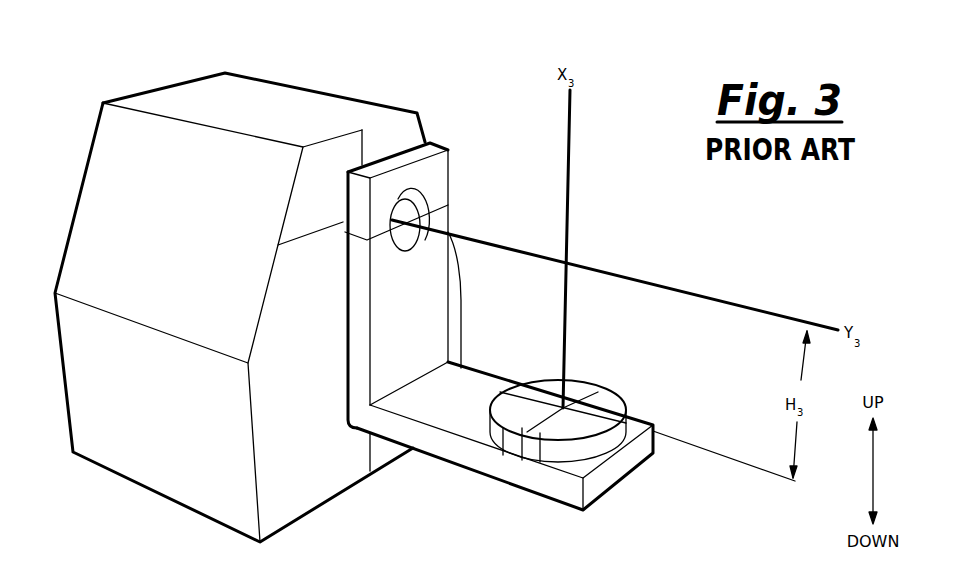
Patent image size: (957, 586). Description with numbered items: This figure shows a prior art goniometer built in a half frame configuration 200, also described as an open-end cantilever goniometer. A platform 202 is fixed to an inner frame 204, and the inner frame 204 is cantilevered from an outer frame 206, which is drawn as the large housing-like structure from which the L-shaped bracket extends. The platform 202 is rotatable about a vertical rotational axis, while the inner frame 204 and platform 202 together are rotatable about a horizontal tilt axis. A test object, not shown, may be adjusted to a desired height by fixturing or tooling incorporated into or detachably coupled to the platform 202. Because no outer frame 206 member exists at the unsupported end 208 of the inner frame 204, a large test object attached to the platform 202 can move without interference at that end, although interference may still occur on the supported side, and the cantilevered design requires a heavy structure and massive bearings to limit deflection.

The half frame configuration 200 is at (88, 45).
The platform 202 is at (606, 386).
The inner frame 204 is at (493, 482).
The outer frame 206 is at (247, 77).
The unsupported end 208 is at (618, 472).